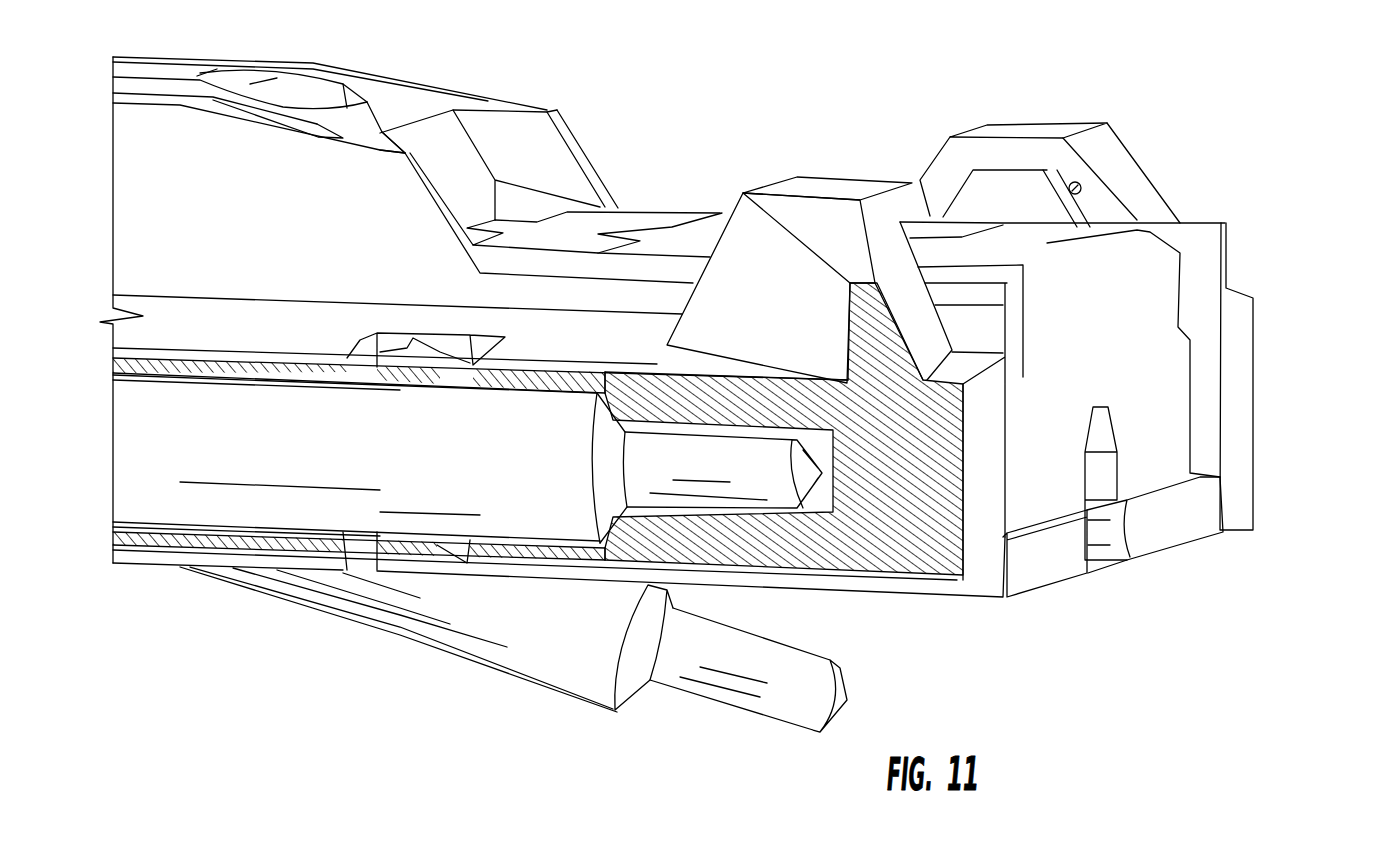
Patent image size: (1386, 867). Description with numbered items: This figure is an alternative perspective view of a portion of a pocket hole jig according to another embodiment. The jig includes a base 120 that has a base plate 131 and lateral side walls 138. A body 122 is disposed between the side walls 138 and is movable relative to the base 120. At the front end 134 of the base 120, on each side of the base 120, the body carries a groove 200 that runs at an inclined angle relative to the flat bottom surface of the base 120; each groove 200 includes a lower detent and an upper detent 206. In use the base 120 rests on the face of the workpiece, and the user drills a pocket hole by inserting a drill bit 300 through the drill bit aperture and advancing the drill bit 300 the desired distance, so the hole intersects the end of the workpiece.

The body 122 is at (535, 148).
The base 120 is at (970, 180).
The upper detent 206 is at (1082, 186).
The groove 200 is at (1082, 207).
The lateral side wall 138 is at (1255, 321).
The front end 134 is at (1240, 368).
The base plate 131 is at (1047, 586).
The drill bit 300 is at (557, 650).